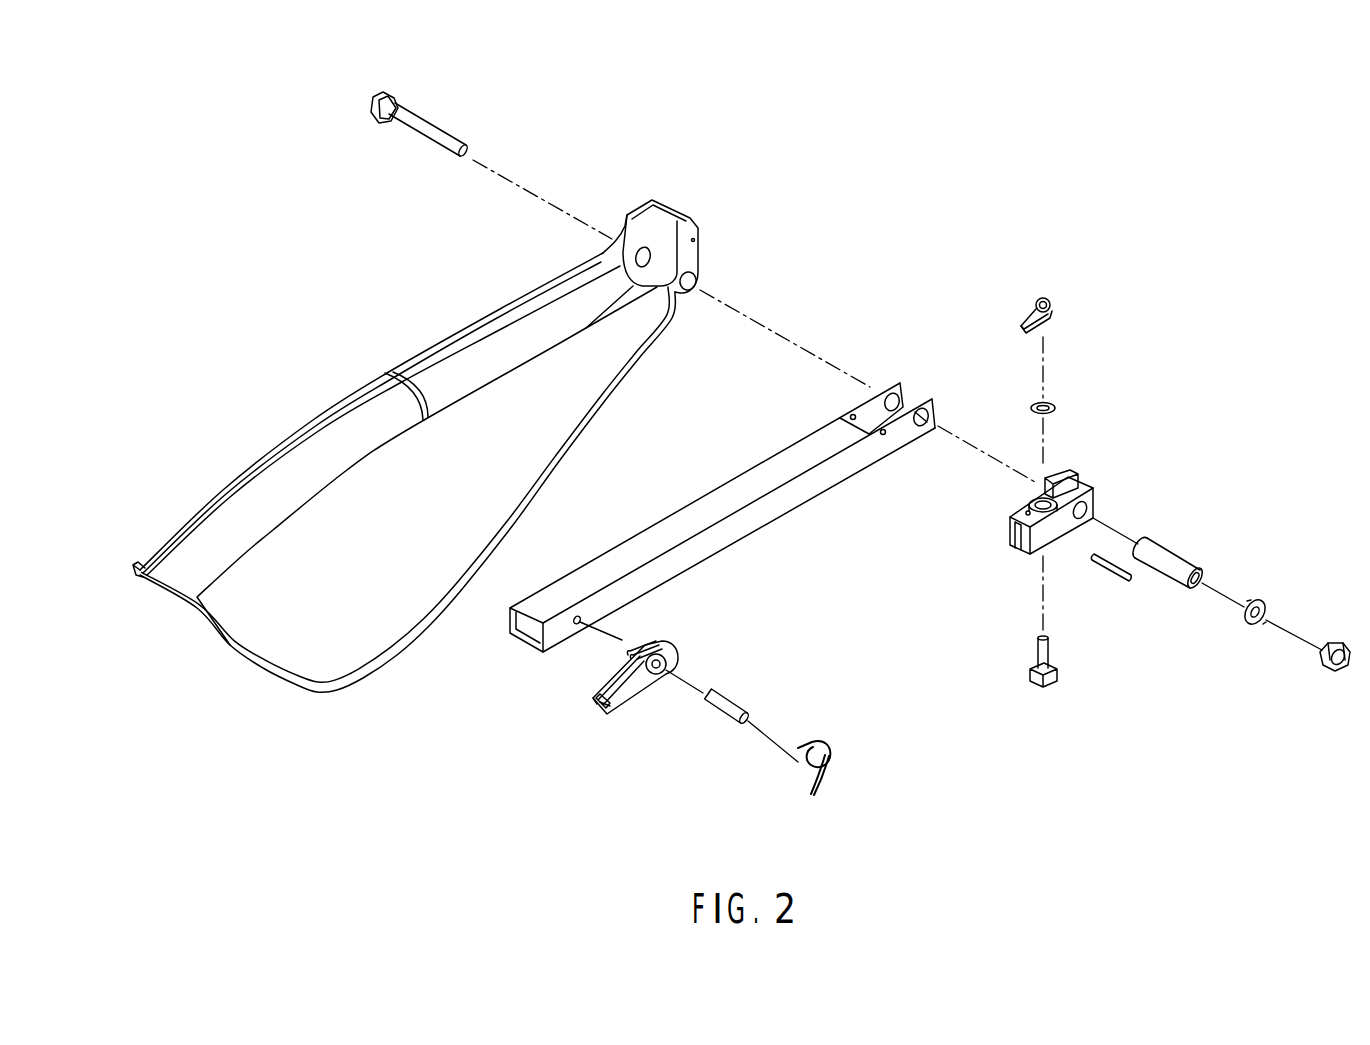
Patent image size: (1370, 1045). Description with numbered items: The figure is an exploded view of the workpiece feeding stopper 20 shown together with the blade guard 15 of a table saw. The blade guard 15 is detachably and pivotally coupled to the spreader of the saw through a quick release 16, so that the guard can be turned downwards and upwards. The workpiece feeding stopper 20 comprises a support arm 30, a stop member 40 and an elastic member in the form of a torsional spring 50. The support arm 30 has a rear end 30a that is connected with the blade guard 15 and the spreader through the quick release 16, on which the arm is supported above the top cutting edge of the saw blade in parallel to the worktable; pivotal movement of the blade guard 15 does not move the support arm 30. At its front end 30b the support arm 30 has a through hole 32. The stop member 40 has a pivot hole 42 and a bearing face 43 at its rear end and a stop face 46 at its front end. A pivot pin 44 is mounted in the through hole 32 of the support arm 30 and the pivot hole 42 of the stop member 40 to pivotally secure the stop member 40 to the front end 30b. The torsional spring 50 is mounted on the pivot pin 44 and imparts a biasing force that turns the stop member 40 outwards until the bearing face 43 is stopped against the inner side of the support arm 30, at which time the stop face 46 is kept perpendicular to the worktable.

The blade guard 15 is at (342, 444).
The quick release 16 is at (1243, 530).
The workpiece feeding stopper 20 is at (486, 758).
The support arm 30 is at (773, 505).
The rear end of the support arm 30a is at (892, 383).
The front end of the support arm 30b is at (537, 607).
The through hole 32 is at (576, 625).
The stop member 40 is at (658, 681).
The pivot hole 42 is at (667, 664).
The bearing face 43 is at (655, 640).
The pivot pin 44 is at (727, 698).
The stop face 46 is at (596, 709).
The torsional spring 50 is at (832, 760).